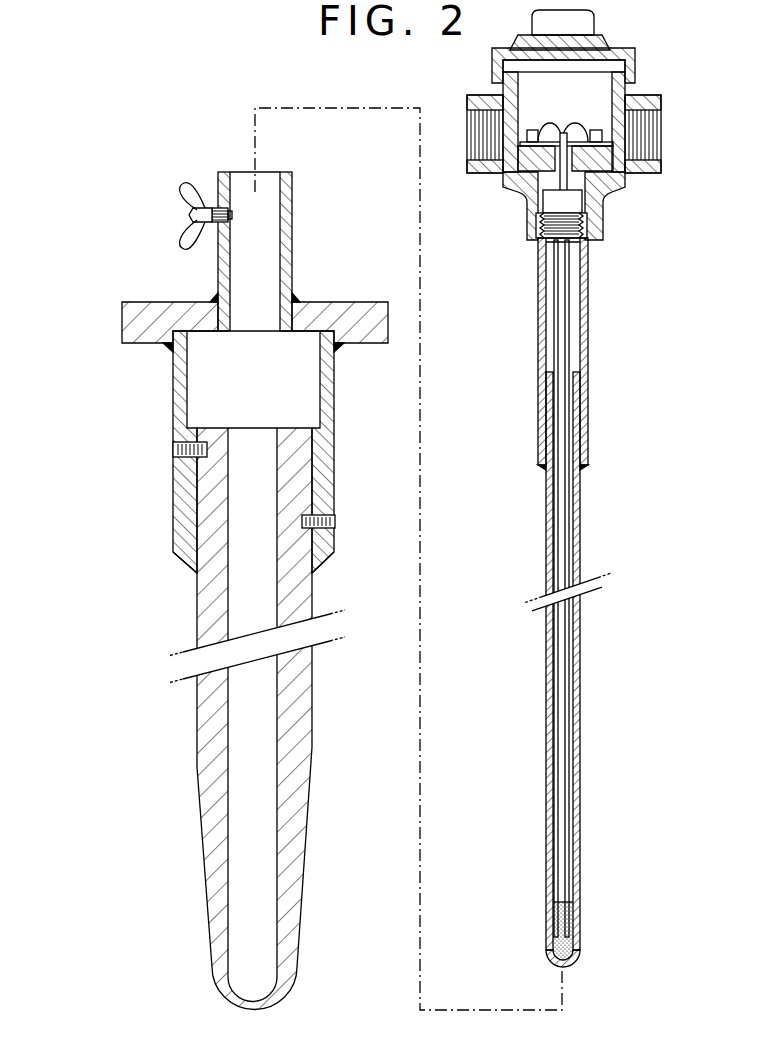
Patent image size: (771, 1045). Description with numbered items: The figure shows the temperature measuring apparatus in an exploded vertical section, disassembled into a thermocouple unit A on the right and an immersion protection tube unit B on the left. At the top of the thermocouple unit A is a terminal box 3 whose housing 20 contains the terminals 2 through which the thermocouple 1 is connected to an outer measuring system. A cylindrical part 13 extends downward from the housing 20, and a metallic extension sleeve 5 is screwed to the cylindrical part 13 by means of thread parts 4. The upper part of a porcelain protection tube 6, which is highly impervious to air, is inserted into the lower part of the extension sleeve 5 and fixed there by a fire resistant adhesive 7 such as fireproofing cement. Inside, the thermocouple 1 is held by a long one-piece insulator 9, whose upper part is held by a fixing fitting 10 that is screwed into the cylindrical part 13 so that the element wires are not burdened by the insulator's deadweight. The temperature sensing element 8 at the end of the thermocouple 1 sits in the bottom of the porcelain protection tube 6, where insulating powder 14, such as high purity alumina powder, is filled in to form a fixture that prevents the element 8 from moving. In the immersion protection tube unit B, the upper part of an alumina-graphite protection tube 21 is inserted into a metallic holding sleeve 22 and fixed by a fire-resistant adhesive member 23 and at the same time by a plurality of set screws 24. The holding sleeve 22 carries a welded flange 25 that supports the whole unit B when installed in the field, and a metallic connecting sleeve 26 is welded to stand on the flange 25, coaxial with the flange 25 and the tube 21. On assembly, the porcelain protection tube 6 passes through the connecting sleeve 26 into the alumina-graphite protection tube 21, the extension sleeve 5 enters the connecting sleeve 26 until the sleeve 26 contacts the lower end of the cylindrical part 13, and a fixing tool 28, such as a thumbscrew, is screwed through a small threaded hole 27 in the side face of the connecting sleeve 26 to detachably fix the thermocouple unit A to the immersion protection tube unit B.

The thermocouple 1 is at (553, 122).
The terminals 2 is at (600, 165).
The terminal box 3 is at (652, 68).
The thread parts 4 is at (597, 232).
The extension sleeve 5 is at (588, 288).
The porcelain protection tube 6 is at (580, 547).
The fire resistant adhesive 7 is at (582, 468).
The temperature sensing element 8 is at (578, 917).
The insulator 9 is at (566, 677).
The fixing fitting 10 is at (545, 200).
The cylindrical part 13 is at (540, 227).
The insulating powder 14 is at (578, 950).
The housing 20 is at (653, 95).
The alumina-graphite protection tube 21 is at (197, 730).
The holding sleeve 22 is at (173, 400).
The fire-resistant adhesive member 23 is at (183, 563).
The set screws 24 is at (173, 452).
The flange 25 is at (122, 325).
The connecting sleeve 26 is at (292, 248).
The small threaded hole 27 is at (229, 219).
The fixing tool 28 is at (188, 232).
The thermocouple unit A is at (613, 333).
The immersion protection tube unit B is at (127, 450).